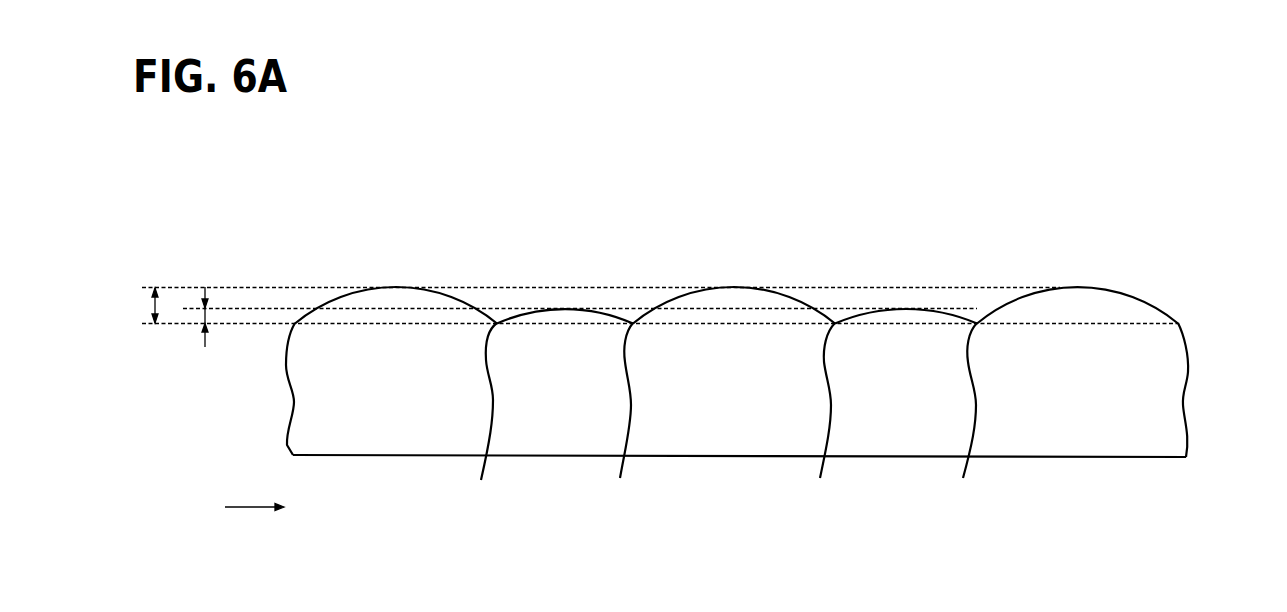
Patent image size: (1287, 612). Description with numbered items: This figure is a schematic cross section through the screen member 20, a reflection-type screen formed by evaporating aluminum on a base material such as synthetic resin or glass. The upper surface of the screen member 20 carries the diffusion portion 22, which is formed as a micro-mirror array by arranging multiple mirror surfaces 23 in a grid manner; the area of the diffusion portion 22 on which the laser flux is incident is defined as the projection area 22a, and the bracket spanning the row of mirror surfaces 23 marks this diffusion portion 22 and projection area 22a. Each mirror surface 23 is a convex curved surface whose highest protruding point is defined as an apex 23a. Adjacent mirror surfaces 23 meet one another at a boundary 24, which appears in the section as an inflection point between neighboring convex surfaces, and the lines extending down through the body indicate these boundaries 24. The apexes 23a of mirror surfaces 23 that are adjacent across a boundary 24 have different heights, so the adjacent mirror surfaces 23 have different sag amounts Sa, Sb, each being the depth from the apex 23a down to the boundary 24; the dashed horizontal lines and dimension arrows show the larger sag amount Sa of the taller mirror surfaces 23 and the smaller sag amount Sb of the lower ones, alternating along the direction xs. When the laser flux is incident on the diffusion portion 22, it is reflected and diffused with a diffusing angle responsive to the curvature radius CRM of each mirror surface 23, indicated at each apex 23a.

The screen member 20 is at (1185, 398).
The diffusion portion 22 is at (1043, 188).
The projection area 22a is at (1043, 188).
The mirror surface 23 is at (338, 298).
The apex 23a is at (399, 287).
The boundary 24 is at (295, 323).
The curvature radius CRM is at (404, 280).
The sag amount Sa is at (135, 305).
The sag amount Sb is at (205, 314).
The x-direction axis xs is at (267, 503).